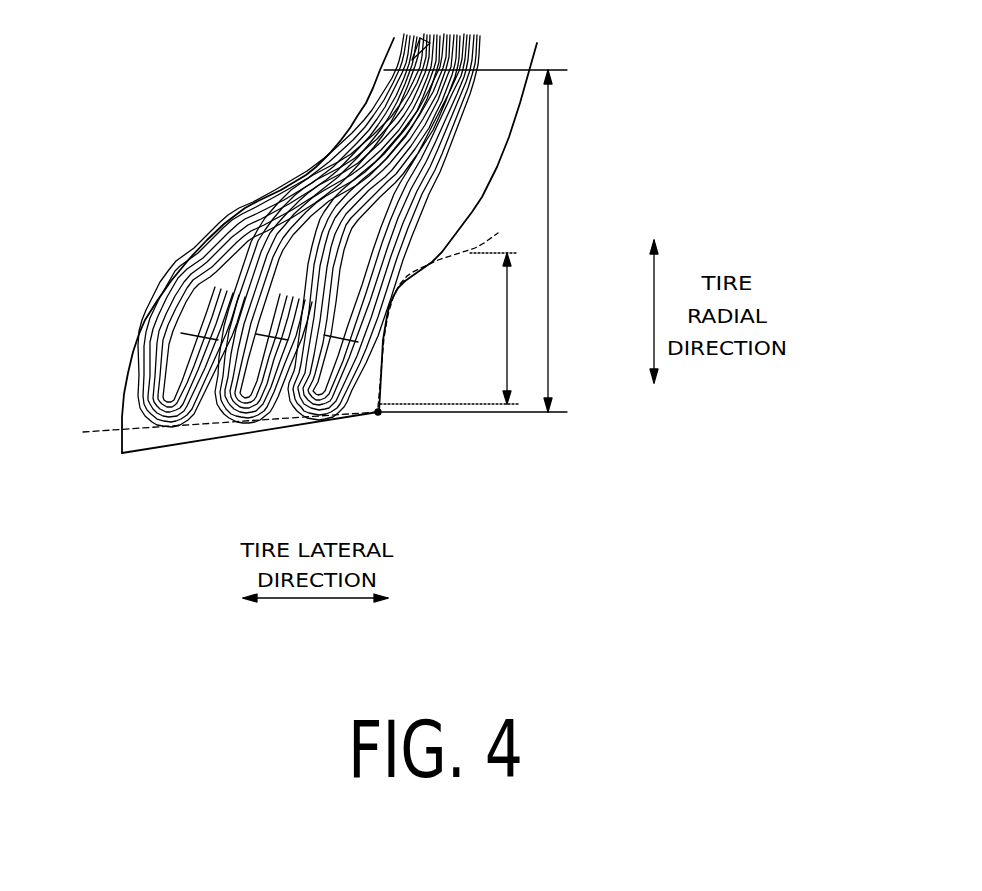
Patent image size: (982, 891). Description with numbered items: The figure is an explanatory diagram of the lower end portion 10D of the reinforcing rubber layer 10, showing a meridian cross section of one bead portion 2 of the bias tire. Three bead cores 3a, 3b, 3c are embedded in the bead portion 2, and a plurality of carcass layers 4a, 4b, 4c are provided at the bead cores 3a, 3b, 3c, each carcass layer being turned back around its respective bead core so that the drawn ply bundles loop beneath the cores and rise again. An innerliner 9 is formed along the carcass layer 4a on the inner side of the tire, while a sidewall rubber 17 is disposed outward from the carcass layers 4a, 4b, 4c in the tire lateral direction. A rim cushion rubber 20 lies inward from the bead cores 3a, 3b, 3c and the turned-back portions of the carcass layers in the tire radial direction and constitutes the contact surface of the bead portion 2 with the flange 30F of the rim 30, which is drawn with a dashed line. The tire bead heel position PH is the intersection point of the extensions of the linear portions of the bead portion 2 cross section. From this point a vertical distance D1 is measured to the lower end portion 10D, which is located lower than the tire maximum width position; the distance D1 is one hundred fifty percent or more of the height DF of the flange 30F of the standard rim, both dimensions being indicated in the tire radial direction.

The bead portion 2 is at (210, 430).
The bead core 3a is at (180, 388).
The bead core 3b is at (250, 390).
The bead core 3c is at (322, 388).
The carcass layer 4a is at (223, 293).
The carcass layer 4b is at (292, 290).
The carcass layer 4c is at (357, 293).
The innerliner 9 is at (338, 131).
The reinforcing rubber layer 10 is at (412, 52).
The lower end portion 10D is at (400, 70).
The sidewall rubber 17 is at (486, 168).
The rim cushion rubber 20 is at (386, 378).
The rim 30 is at (102, 447).
The flange 30F is at (450, 307).
The tire bead heel position PH is at (378, 414).
The height of flange DF is at (506, 327).
The vertical distance D1 is at (549, 312).